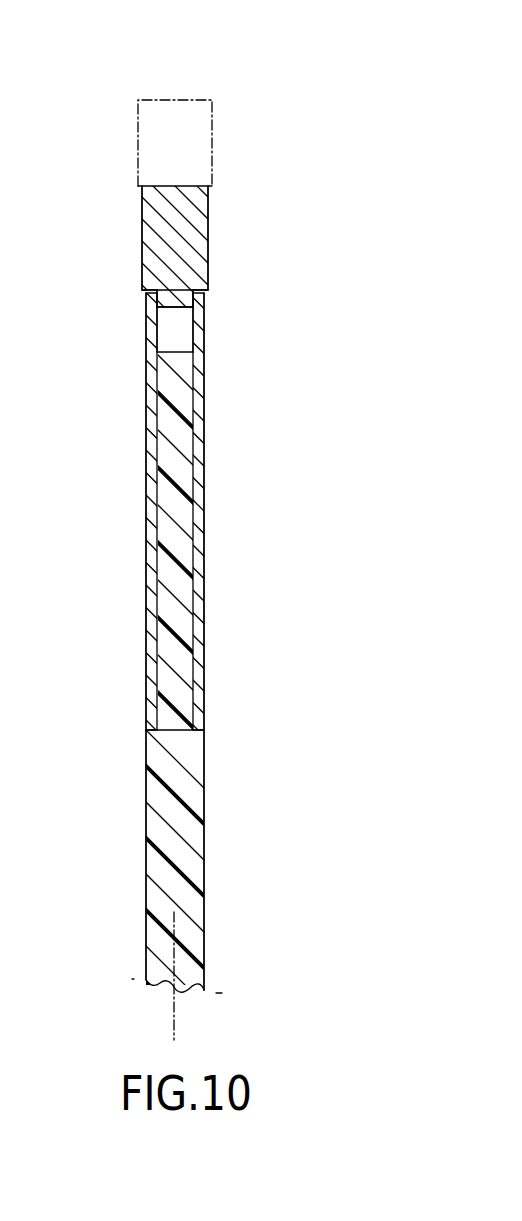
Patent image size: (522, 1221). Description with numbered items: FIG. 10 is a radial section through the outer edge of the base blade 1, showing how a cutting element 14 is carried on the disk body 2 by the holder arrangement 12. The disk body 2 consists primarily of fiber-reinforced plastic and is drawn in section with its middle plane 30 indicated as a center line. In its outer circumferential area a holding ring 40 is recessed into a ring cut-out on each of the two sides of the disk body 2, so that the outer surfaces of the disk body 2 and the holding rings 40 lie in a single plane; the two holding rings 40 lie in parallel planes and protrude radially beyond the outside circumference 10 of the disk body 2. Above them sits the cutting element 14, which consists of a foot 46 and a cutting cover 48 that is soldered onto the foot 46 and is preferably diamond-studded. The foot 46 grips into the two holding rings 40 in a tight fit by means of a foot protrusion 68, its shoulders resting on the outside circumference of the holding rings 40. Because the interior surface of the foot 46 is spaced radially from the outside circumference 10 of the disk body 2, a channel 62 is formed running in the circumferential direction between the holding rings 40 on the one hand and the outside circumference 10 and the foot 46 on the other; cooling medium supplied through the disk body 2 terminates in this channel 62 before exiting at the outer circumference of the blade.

The base blade 1 is at (128, 913).
The disk body 2 is at (190, 837).
The outside circumference 10 is at (172, 349).
The holder arrangement 12 is at (133, 265).
The cutting element 14 is at (182, 182).
The middle plane 30 is at (174, 1018).
The holding ring 40 is at (152, 455).
The foot 46 is at (194, 242).
The cutting cover 48 is at (193, 110).
The circumferential channel 62 is at (183, 318).
The foot protrusion 68 is at (152, 302).